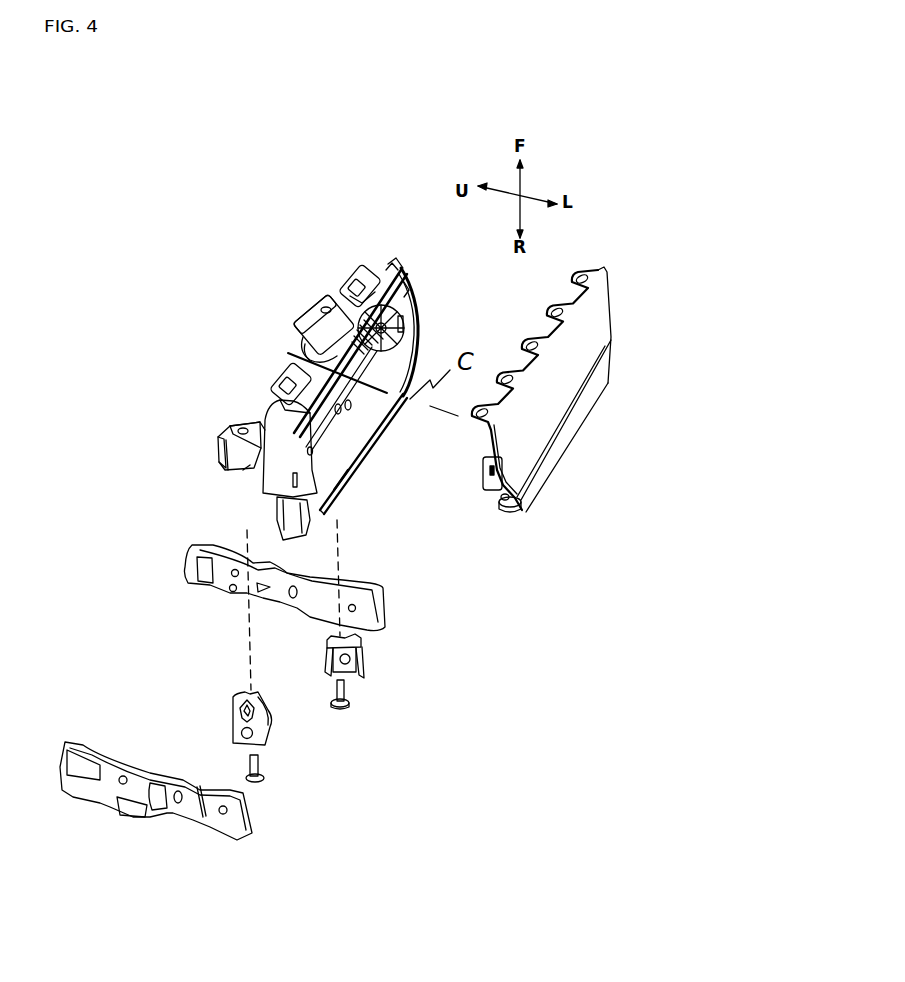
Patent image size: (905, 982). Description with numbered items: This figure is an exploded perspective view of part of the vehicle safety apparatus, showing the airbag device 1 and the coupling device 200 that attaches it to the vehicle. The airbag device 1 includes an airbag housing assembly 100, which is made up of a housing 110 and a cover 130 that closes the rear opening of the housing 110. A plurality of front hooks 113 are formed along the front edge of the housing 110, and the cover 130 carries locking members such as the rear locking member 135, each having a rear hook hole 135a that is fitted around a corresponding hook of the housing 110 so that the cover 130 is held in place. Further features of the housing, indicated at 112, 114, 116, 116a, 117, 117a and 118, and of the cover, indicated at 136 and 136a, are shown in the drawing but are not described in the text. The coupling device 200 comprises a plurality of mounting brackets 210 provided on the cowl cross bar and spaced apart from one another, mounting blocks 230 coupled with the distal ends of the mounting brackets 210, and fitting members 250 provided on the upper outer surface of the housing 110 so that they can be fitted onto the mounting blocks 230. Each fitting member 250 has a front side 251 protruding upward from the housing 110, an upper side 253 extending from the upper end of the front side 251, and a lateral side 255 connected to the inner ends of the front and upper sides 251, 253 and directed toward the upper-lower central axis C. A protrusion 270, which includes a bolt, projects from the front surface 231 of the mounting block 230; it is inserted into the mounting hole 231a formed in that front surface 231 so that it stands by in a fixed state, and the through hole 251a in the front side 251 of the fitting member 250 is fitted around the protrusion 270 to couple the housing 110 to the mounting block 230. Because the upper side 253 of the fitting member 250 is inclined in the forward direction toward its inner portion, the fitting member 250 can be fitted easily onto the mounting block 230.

The airbag device 1 is at (163, 268).
The airbag housing assembly 100 is at (270, 333).
The housing 110 is at (418, 311).
The side block 112 is at (294, 475).
The front hooks 113 is at (389, 278).
The connecting rod 114 is at (288, 357).
The upper clamp 116 is at (396, 266).
The clamp flange 116a is at (410, 290).
The lower edge 117 is at (325, 509).
The lower edge flange 117a is at (340, 494).
The clamp module 118 is at (333, 298).
The cover 130 is at (608, 302).
The rear locking member 135 is at (515, 503).
The rear hook hole 135a is at (498, 497).
The lower bracket 136 is at (483, 488).
The bracket slot 136a is at (490, 470).
The coupling device 200 is at (319, 744).
The mounting bracket 210 is at (230, 820).
The mounting block 230 is at (237, 716).
The front surface of the mounting block 231 is at (249, 694).
The mounting hole 231a is at (250, 692).
The fitting member 250 is at (215, 444).
The front side of the fitting member 251 is at (257, 425).
The through hole 251a is at (242, 430).
The upper side of the fitting member 253 is at (226, 456).
The lateral side of the fitting member 255 is at (243, 470).
The protrusion 270 is at (350, 693).